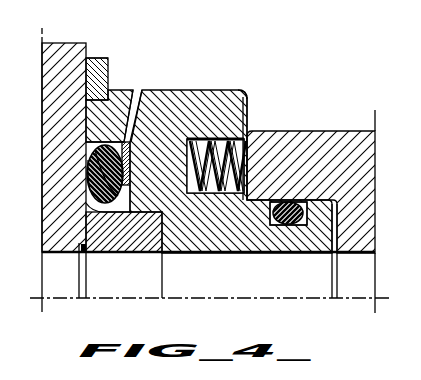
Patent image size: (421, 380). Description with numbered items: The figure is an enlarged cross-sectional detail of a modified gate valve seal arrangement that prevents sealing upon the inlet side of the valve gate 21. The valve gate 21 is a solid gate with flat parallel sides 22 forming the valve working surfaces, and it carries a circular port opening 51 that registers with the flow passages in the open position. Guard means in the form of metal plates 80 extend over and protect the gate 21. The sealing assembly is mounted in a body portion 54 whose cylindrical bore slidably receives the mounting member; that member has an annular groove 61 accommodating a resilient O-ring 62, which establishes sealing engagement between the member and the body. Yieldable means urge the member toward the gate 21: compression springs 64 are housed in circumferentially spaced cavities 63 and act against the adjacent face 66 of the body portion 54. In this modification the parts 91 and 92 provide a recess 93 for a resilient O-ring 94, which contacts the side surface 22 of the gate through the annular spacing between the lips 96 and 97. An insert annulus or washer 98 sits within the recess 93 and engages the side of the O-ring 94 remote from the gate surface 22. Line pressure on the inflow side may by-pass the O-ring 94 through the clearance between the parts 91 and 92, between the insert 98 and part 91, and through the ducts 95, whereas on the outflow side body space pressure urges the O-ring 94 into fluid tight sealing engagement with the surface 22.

The valve gate 21 is at (66, 43).
The flat parallel sides 22 is at (97, 57).
The metal plates 80 is at (103, 58).
The ducts 95 is at (133, 103).
The insert annulus or washer 98 is at (133, 147).
The cavities 63 is at (206, 138).
The compression springs 64 is at (224, 136).
The adjacent face 66 is at (248, 142).
The body portion 54 is at (293, 133).
The recess 93 is at (110, 146).
The lip 96 is at (88, 153).
The resilient O-ring 94 is at (87, 174).
The lip 97 is at (90, 203).
The opening 51 is at (50, 273).
The part 92 is at (108, 242).
The part 91 is at (193, 238).
The annular groove 61 is at (278, 226).
The resilient O-ring 62 is at (300, 227).